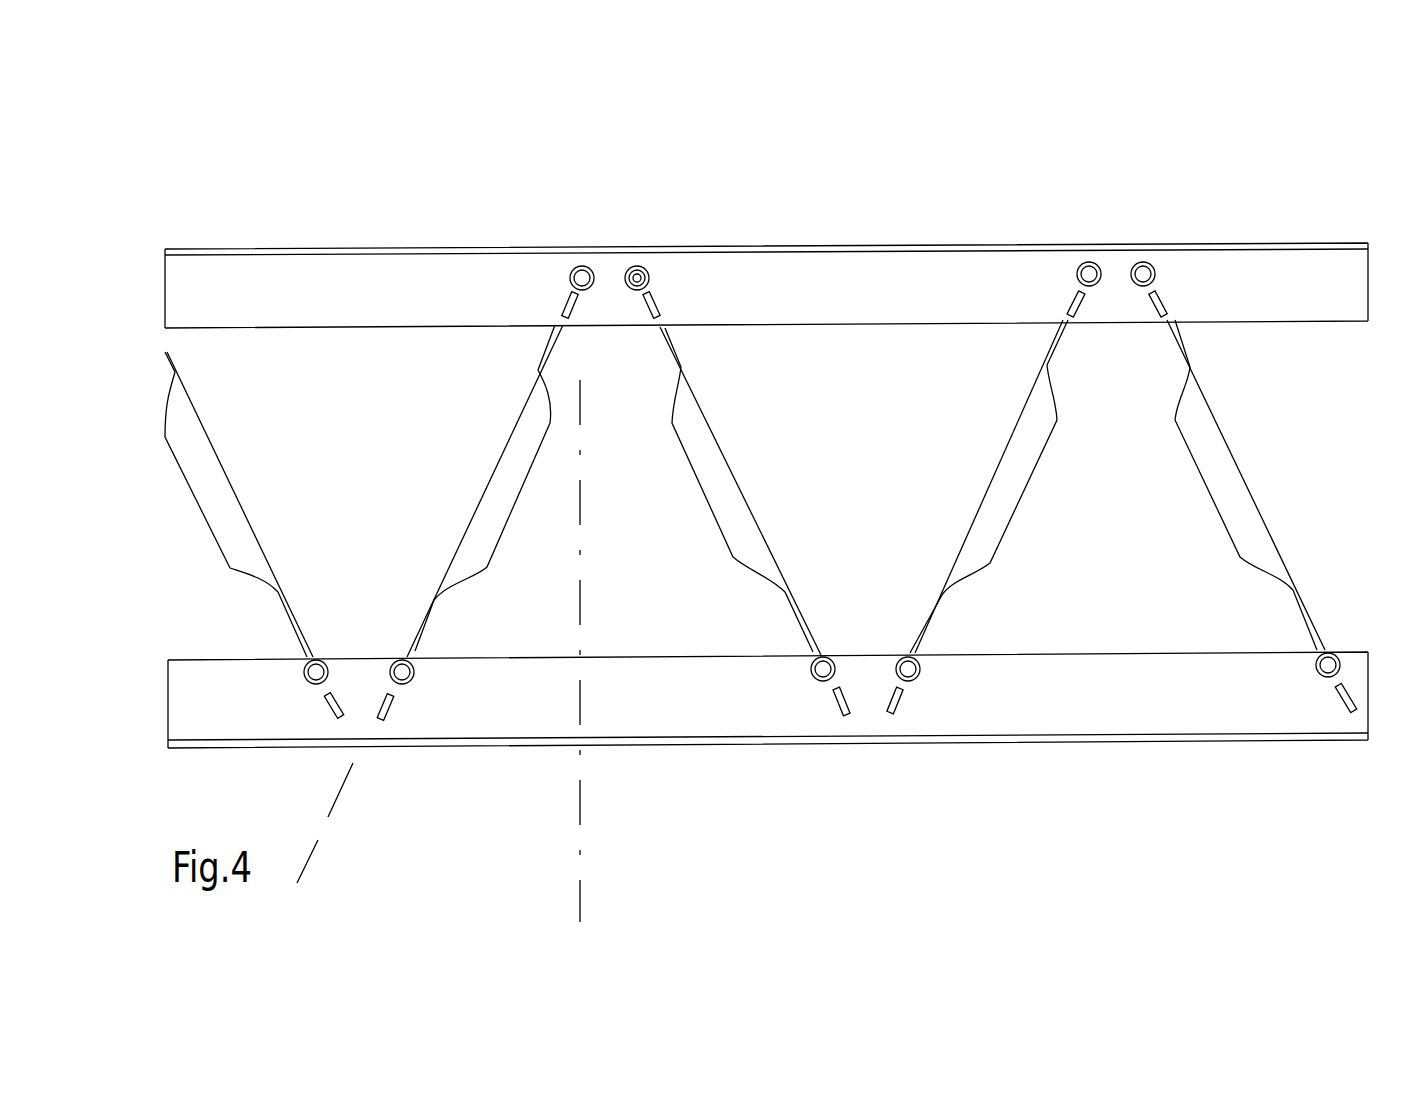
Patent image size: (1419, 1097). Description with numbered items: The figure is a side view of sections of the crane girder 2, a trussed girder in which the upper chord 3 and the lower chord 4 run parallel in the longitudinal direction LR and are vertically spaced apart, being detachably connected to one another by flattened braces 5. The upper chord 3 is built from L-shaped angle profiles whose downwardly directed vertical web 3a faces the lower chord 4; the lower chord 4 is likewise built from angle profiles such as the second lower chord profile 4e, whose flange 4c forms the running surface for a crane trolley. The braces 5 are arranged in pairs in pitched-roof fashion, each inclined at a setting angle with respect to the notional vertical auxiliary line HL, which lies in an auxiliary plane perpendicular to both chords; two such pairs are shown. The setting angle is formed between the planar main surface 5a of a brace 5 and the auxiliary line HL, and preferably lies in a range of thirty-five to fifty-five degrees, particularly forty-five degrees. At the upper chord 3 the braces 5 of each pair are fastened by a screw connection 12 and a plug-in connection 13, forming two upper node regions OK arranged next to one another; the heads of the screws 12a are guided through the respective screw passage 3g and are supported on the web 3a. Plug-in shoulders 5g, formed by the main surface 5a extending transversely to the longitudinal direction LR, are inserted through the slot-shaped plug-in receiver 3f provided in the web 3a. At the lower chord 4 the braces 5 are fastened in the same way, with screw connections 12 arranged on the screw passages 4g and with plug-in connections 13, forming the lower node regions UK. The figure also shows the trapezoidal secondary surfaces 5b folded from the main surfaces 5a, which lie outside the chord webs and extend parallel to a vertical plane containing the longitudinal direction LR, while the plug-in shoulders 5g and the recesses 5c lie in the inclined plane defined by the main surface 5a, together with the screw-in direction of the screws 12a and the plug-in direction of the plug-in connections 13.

The crane girder 2 is at (240, 100).
The upper chord 3 is at (766, 212).
The vertical web 3a is at (766, 212).
The plug-in receiver 3f is at (540, 296).
The screw passage 3g is at (597, 252).
The lower chord 4 is at (793, 725).
The second lower chord profile 4e is at (793, 725).
The flange 4c is at (1257, 710).
The screw passage 4g is at (798, 678).
The brace 5 is at (422, 524).
The main surface 5a is at (460, 734).
The secondary surface 5b is at (487, 517).
The recess 5c is at (432, 620).
The plug-in shoulder 5g is at (570, 290).
The screw connection 12 is at (757, 453).
The screw 12a is at (639, 266).
The plug-in connection 13 is at (684, 298).
The upper node region OK is at (575, 244).
The lower node region UK is at (298, 695).
The longitudinal direction LR is at (1133, 149).
The auxiliary line HL is at (593, 882).